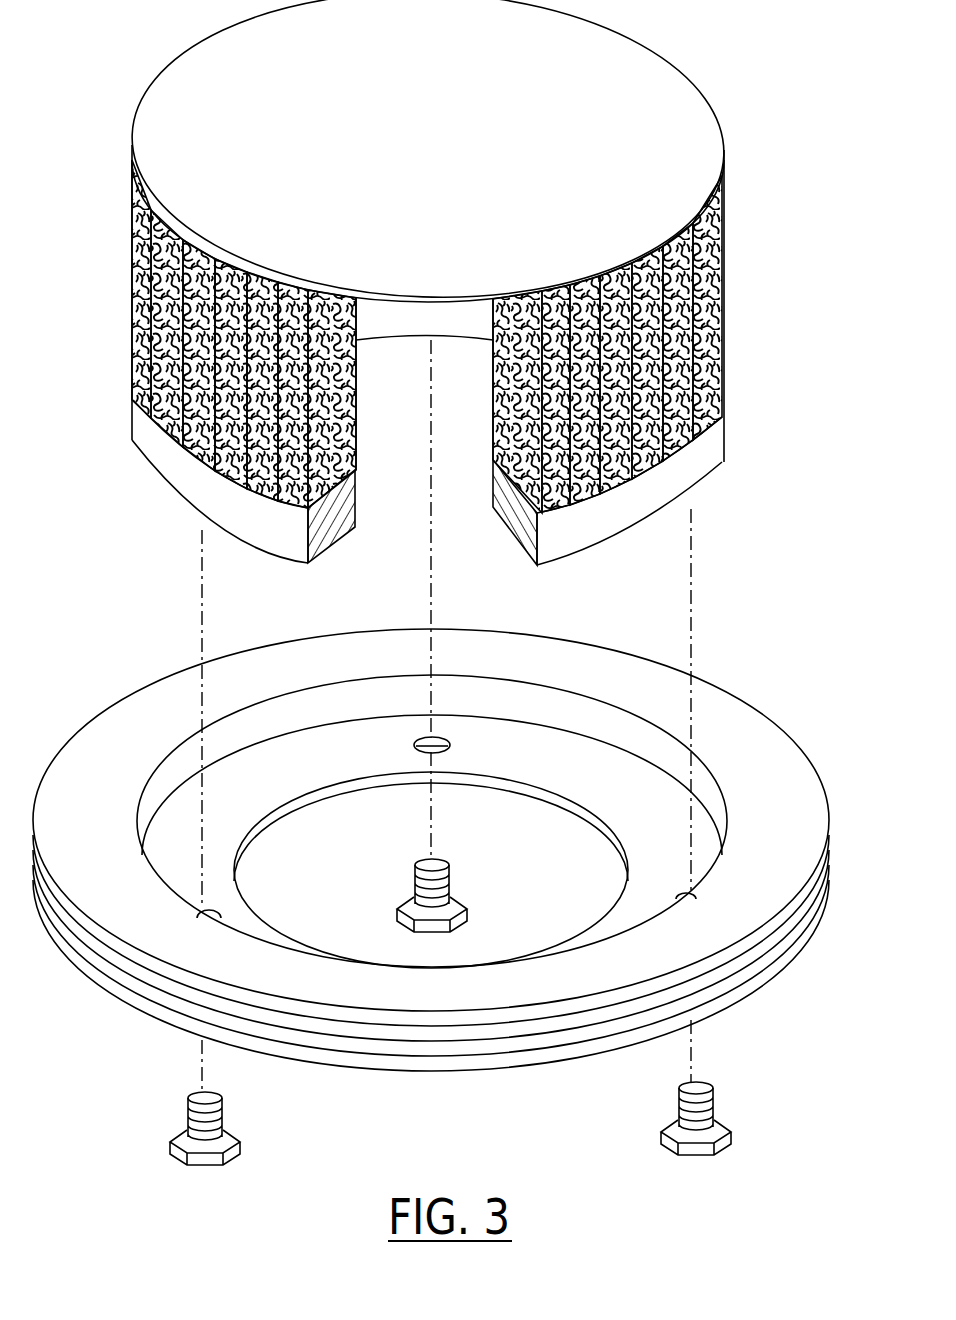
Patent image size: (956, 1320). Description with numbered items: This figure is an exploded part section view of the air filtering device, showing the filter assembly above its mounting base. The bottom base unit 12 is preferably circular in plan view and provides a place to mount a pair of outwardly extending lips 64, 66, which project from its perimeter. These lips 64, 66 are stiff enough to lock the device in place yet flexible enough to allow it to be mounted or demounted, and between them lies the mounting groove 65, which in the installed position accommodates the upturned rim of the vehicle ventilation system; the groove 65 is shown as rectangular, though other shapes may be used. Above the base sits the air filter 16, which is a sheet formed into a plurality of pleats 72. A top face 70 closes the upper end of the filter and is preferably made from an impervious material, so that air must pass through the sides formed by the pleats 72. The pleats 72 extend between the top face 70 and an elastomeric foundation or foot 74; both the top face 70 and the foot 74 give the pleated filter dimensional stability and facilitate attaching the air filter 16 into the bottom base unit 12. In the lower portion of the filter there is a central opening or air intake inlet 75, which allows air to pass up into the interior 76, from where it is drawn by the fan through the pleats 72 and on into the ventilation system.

The top face 70 is at (446, 169).
The interior 76 is at (413, 462).
The air filter 16 is at (425, 336).
The pleats 72 is at (185, 420).
The elastomeric foundation or foot 74 is at (123, 728).
The bottom base unit 12 is at (442, 876).
The central opening or air intake inlet 75 is at (361, 884).
The lip 64 is at (757, 932).
The mounting groove 65 is at (550, 1028).
The lip 66 is at (740, 987).